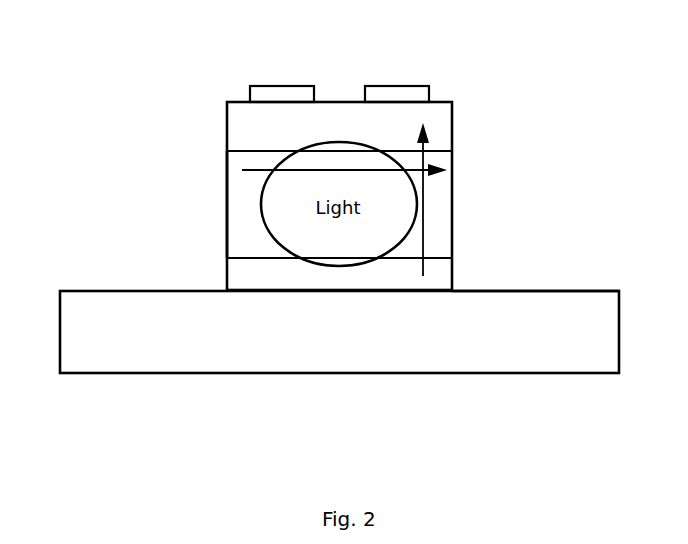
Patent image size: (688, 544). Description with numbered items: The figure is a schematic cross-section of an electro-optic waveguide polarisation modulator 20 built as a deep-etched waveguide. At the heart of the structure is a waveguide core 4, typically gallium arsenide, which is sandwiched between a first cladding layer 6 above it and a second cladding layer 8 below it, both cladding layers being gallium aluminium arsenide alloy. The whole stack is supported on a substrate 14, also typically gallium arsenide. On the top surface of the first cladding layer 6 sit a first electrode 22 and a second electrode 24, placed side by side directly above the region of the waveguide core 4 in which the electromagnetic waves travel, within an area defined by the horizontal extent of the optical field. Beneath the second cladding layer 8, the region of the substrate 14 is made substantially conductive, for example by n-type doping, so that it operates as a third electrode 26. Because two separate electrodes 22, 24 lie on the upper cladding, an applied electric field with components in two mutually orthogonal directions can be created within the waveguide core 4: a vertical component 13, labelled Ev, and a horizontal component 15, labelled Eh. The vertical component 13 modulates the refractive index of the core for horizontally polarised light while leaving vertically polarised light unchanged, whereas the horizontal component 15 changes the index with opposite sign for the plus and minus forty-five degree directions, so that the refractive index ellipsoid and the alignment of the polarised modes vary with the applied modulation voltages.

The waveguide polarisation modulator 20 is at (84, 94).
The substrate 14 is at (156, 339).
The third electrode 26 is at (462, 305).
The first cladding layer 6 is at (240, 130).
The waveguide core 4 is at (238, 230).
The second cladding layer 8 is at (238, 275).
The first electrode 22 is at (263, 92).
The second electrode 24 is at (405, 95).
The vertical electric field component 13 is at (428, 127).
The horizontal electric field component 15 is at (437, 163).